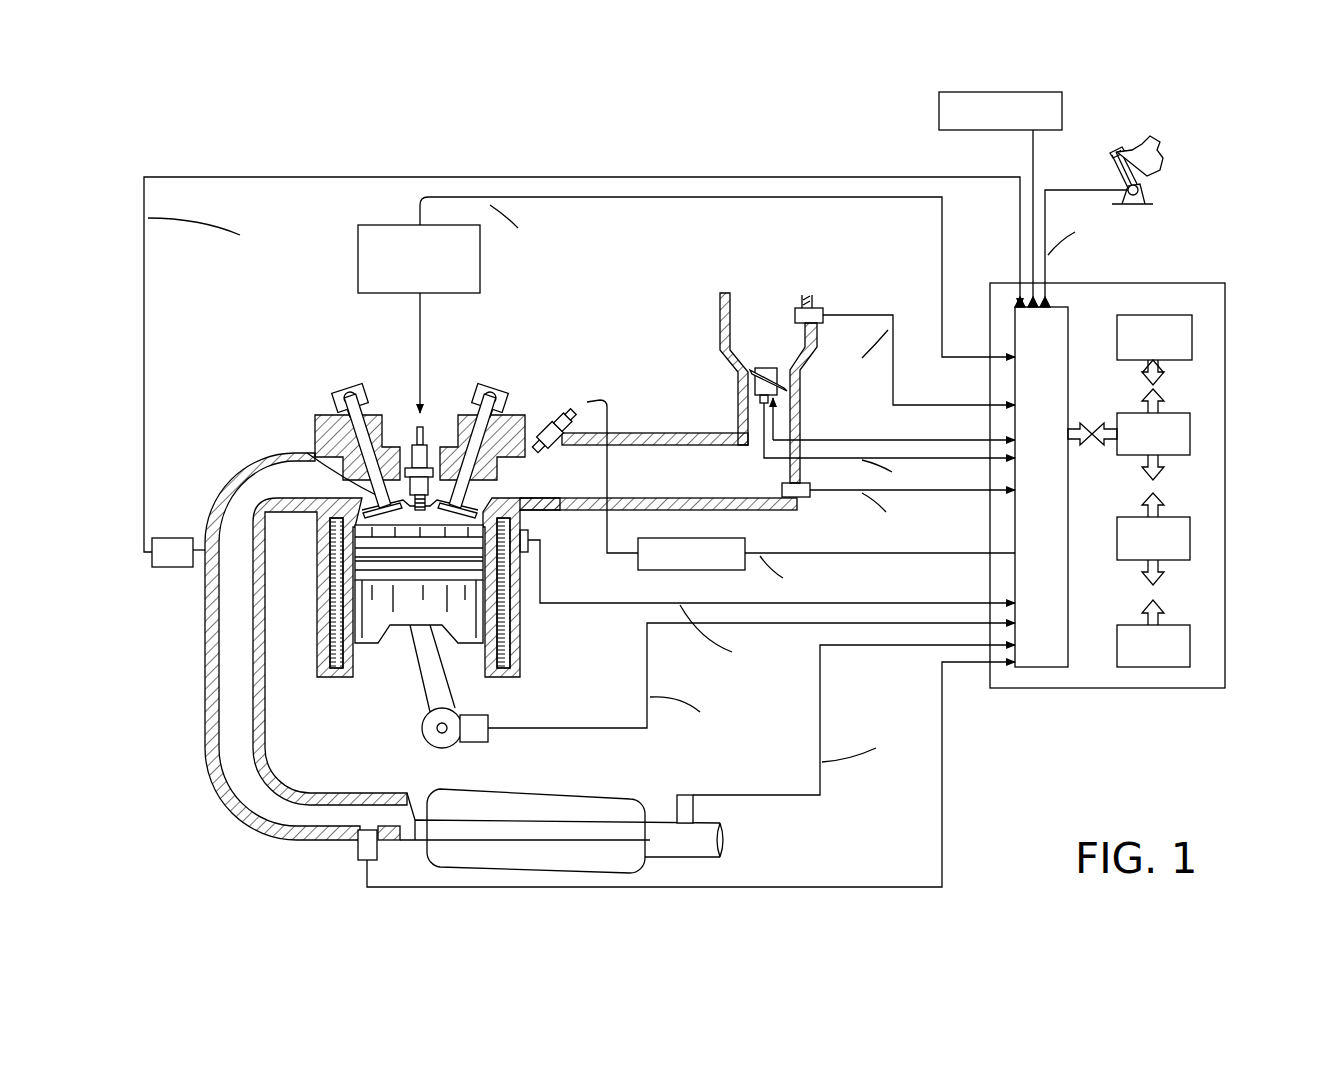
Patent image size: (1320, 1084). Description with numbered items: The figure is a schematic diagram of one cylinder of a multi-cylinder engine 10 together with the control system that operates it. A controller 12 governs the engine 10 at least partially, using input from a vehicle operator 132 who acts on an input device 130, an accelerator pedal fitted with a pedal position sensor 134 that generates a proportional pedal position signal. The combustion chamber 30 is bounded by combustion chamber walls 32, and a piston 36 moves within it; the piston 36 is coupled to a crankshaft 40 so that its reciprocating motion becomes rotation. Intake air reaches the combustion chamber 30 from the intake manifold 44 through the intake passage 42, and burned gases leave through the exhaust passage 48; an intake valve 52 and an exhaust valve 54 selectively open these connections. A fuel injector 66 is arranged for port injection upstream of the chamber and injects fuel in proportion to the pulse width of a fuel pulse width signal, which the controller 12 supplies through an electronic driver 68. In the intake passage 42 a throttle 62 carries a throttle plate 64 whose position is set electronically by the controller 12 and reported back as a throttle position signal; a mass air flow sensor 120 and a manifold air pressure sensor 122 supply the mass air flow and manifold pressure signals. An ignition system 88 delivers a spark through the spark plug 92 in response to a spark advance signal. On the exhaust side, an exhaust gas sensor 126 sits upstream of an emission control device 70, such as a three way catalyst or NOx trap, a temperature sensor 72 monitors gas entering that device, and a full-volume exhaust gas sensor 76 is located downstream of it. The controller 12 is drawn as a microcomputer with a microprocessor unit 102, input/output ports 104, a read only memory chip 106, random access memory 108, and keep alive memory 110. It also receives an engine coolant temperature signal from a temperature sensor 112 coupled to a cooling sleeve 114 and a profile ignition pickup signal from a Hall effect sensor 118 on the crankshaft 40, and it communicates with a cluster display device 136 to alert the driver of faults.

The engine 10 is at (250, 370).
The controller 12 is at (1215, 283).
The combustion chamber 30 is at (417, 520).
The combustion chamber walls 32 is at (362, 663).
The piston 36 is at (420, 615).
The crankshaft 40 is at (430, 745).
The intake passage 42 is at (780, 343).
The intake manifold 44 is at (713, 483).
The exhaust passage 48 is at (297, 491).
The intake valve 52 is at (457, 495).
The exhaust valve 54 is at (375, 492).
The throttle 62 is at (788, 384).
The throttle plate 64 is at (752, 380).
The fuel injector 66 is at (556, 414).
The electronic driver 68 is at (658, 572).
The emission control device 70 is at (603, 796).
The temperature sensor 72 is at (357, 848).
The full-volume exhaust gas sensor 76 is at (692, 797).
The ignition system 88 is at (393, 211).
The spark plug 92 is at (430, 448).
The microprocessor unit 102 is at (1195, 425).
The input/output ports 104 is at (1070, 315).
The read only memory chip 106 is at (1195, 335).
The random access memory 108 is at (1195, 535).
The keep alive memory 110 is at (1195, 645).
The temperature sensor 112 is at (533, 542).
The cooling sleeve 114 is at (505, 625).
The Hall effect sensor 118 is at (475, 742).
The mass air flow sensor 120 is at (815, 310).
The manifold air pressure sensor 122 is at (805, 498).
The exhaust gas sensor 126 is at (152, 548).
The input device 130 is at (1112, 172).
The vehicle operator 132 is at (1166, 158).
The pedal position sensor 134 is at (1155, 192).
The cluster display device 136 is at (936, 112).